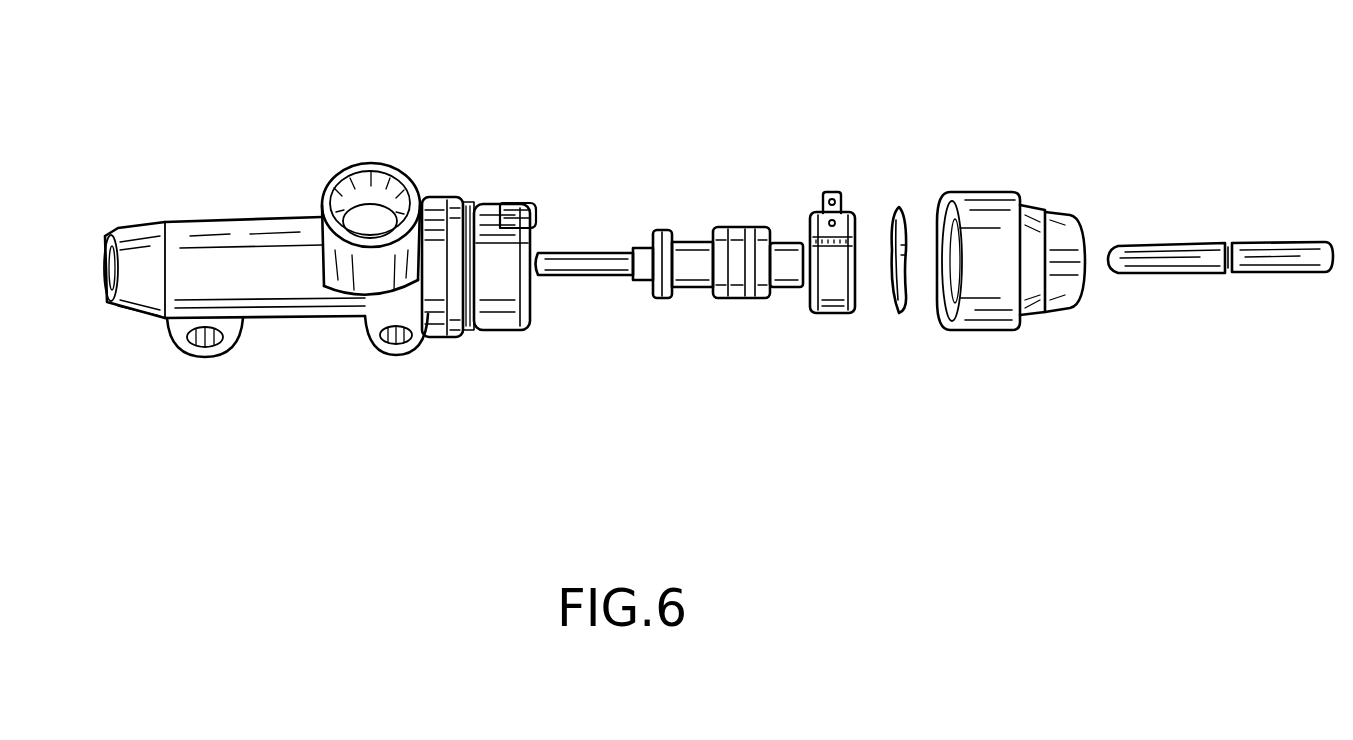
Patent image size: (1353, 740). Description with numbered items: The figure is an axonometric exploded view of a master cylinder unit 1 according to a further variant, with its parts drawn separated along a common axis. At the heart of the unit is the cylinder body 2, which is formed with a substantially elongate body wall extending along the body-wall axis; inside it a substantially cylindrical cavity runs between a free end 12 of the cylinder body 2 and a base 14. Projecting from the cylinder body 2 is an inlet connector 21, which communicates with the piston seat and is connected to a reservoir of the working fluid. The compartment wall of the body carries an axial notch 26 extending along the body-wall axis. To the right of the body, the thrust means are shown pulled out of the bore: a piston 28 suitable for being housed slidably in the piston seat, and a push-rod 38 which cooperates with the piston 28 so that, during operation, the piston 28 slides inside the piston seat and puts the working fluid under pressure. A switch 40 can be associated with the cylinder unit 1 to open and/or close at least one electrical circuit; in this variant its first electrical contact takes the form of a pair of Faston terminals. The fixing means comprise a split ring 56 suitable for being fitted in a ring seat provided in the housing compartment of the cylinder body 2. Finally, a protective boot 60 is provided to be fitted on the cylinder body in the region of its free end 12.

The master cylinder unit 1 is at (438, 128).
The cylinder body 2 is at (282, 342).
The free end 12 is at (545, 215).
The base 14 is at (88, 258).
The inlet connector 21 is at (328, 175).
The axial notch 26 is at (510, 200).
The piston 28 is at (690, 245).
The push-rod 38 is at (1262, 255).
The switch 40 is at (833, 186).
The split ring 56 is at (910, 195).
The protective boot 60 is at (998, 342).